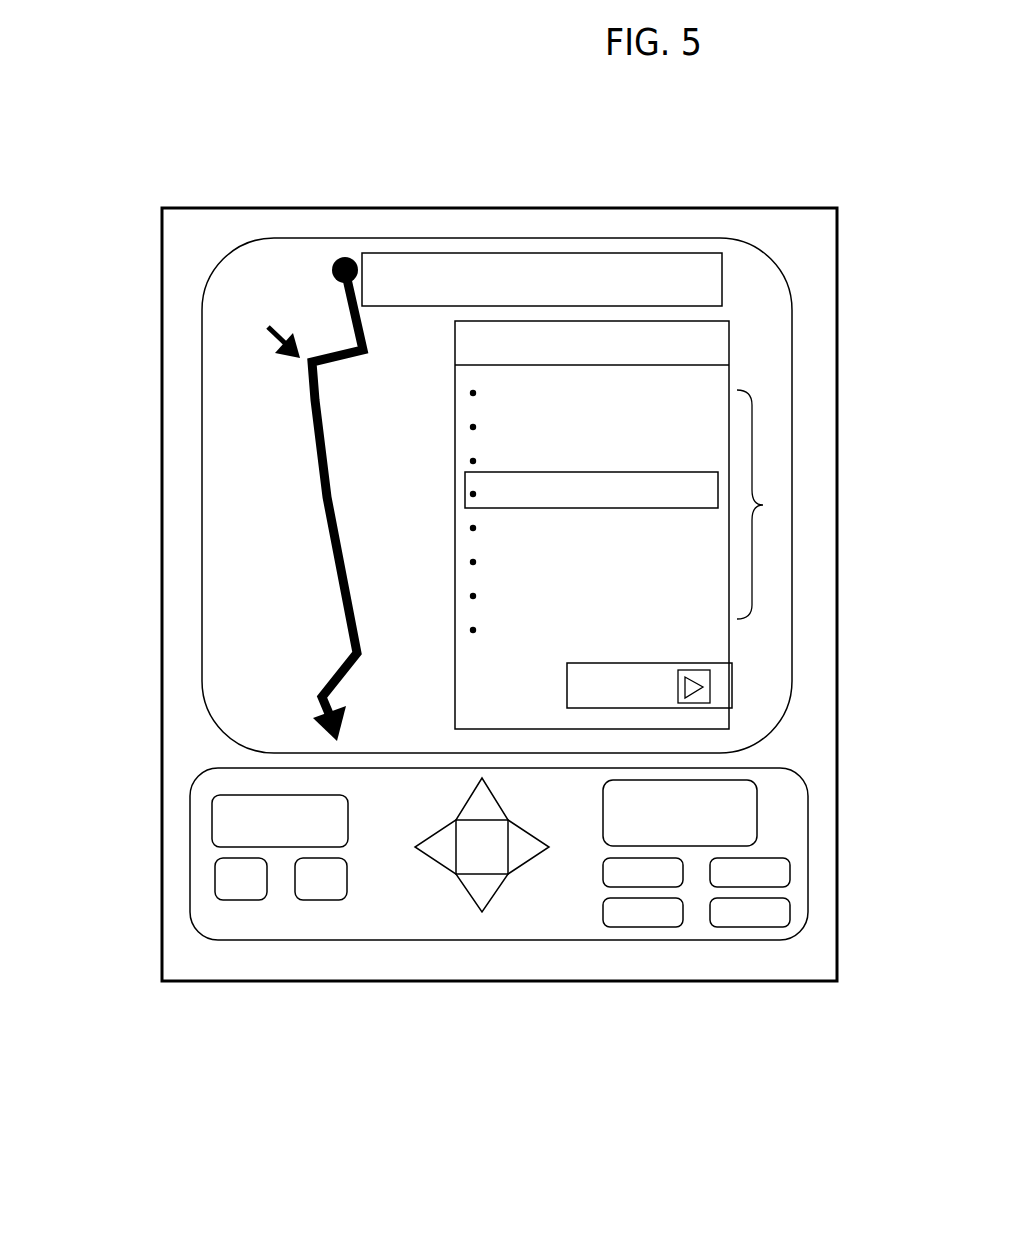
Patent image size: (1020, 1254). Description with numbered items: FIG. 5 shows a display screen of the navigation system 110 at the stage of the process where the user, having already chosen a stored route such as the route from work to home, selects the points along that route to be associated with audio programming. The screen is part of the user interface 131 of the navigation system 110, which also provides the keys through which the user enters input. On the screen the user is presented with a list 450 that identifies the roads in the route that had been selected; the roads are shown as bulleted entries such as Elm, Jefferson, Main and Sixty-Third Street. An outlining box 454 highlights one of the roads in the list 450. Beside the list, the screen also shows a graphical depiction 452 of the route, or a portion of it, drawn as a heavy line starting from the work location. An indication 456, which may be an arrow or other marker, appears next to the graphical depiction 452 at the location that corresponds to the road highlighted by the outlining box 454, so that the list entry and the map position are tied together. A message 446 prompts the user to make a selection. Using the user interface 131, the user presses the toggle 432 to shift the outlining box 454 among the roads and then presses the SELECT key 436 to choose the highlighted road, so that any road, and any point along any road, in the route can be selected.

The navigation system 110 is at (499, 554).
The message 446 is at (498, 448).
The graphical depiction of the route 452 is at (297, 430).
The indication 456 is at (267, 335).
The outlining box 454 is at (687, 460).
The list 450 is at (763, 512).
The toggle 432 is at (458, 882).
The SELECT key 436 is at (765, 830).
The user interface 131 is at (552, 900).